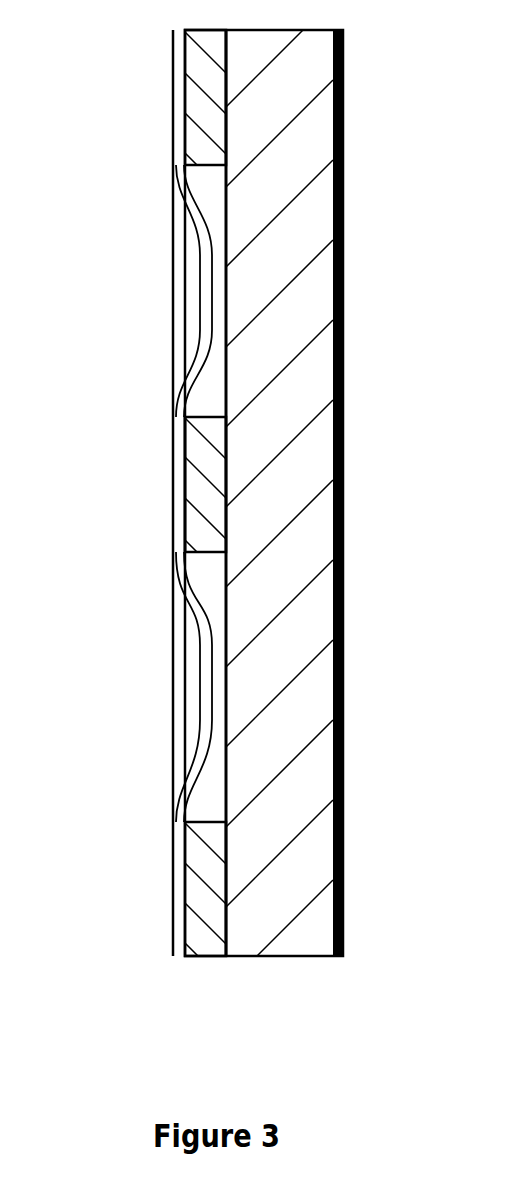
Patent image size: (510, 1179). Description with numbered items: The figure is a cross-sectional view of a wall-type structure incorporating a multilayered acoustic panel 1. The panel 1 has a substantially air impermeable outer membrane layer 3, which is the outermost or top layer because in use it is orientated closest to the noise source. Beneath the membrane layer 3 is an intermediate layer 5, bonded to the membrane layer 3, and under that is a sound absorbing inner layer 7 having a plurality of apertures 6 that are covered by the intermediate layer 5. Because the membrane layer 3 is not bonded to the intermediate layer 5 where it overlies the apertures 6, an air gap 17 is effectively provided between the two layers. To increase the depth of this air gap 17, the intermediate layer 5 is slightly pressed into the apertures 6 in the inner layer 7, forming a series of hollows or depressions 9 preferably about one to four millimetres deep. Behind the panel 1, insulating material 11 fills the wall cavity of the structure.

The multilayered acoustic panel 1 is at (119, 184).
The membrane layer 3 is at (173, 702).
The intermediate layer 5 is at (177, 442).
The apertures 6 is at (212, 203).
The inner layer 7 is at (197, 63).
The depressions 9 is at (197, 635).
The insulating material 11 is at (283, 787).
The air gap 17 is at (187, 290).